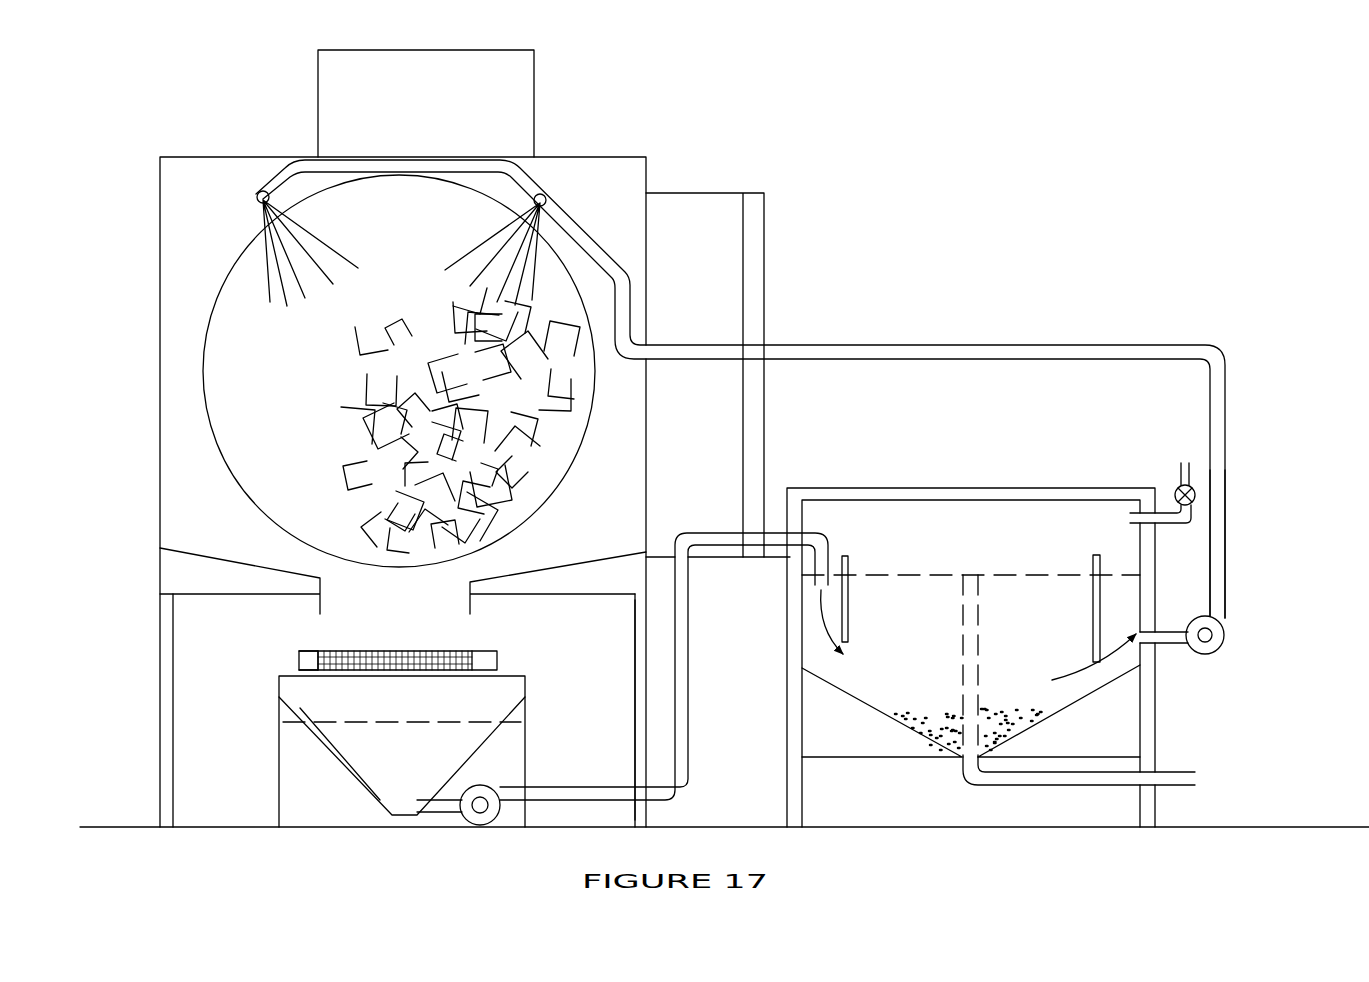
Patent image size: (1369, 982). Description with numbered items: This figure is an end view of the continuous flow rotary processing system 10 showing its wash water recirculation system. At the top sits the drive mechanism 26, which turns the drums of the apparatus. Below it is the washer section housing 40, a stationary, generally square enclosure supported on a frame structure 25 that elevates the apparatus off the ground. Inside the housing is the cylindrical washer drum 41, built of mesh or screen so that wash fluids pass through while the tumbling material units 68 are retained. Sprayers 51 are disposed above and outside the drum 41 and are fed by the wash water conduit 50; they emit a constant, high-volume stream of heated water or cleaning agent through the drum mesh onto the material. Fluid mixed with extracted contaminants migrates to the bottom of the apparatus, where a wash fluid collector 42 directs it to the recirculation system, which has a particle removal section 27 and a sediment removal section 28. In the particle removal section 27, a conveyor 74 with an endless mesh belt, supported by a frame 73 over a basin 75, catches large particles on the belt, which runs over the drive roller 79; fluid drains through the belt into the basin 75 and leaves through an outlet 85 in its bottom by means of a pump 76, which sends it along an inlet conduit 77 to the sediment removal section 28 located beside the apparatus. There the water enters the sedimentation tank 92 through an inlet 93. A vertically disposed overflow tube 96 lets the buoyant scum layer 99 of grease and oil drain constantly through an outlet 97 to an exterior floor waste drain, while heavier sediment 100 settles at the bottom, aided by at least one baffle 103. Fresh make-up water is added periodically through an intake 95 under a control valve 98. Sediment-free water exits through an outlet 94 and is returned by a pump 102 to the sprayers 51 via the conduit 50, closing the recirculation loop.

The continuous flow rotary processing system 10 is at (203, 128).
The drive mechanism 26 is at (548, 90).
The housing 40 is at (158, 415).
The washer drum 41 is at (238, 491).
The material units 68 is at (412, 386).
The wash water conduit 50 is at (602, 262).
The sprayers 51 is at (258, 203).
The wash fluid collector 42 is at (242, 576).
The particle removal section 27 is at (154, 642).
The frame structure 25 is at (634, 672).
The conveyor 74 is at (345, 648).
The drive roller 79 is at (298, 660).
The frame 73 is at (278, 772).
The basin 75 is at (352, 778).
The outlet 85 is at (445, 806).
The pump 76 is at (486, 785).
The inlet conduit 77 is at (680, 780).
The inlet 93 is at (824, 545).
The sediment removal section 28 is at (1272, 492).
The scum layer 99 is at (1037, 578).
The baffle 103 is at (850, 616).
The sediment 100 is at (922, 653).
The overflow tube 96 is at (975, 657).
The sedimentation tank 92 is at (1070, 706).
The outlet 94 is at (1178, 652).
The pump 102 is at (1224, 640).
The outlet 97 is at (1190, 768).
The intake 95 is at (1130, 520).
The control valve 98 is at (1200, 500).